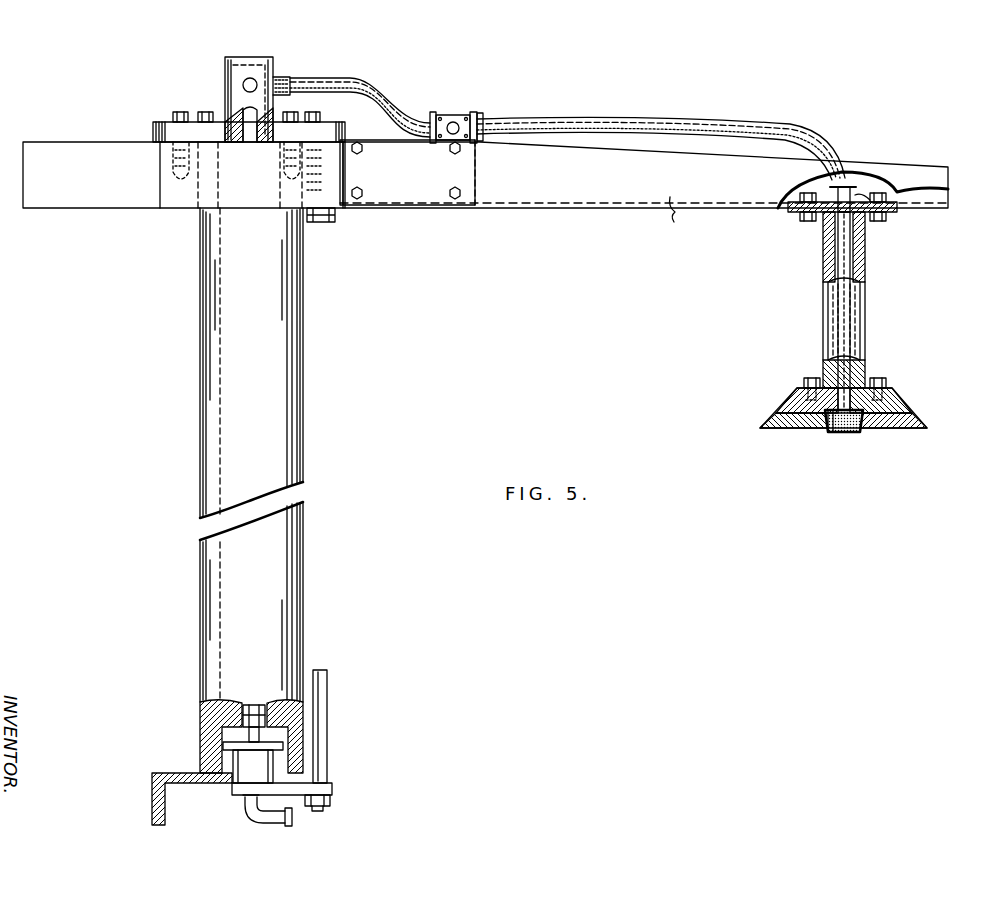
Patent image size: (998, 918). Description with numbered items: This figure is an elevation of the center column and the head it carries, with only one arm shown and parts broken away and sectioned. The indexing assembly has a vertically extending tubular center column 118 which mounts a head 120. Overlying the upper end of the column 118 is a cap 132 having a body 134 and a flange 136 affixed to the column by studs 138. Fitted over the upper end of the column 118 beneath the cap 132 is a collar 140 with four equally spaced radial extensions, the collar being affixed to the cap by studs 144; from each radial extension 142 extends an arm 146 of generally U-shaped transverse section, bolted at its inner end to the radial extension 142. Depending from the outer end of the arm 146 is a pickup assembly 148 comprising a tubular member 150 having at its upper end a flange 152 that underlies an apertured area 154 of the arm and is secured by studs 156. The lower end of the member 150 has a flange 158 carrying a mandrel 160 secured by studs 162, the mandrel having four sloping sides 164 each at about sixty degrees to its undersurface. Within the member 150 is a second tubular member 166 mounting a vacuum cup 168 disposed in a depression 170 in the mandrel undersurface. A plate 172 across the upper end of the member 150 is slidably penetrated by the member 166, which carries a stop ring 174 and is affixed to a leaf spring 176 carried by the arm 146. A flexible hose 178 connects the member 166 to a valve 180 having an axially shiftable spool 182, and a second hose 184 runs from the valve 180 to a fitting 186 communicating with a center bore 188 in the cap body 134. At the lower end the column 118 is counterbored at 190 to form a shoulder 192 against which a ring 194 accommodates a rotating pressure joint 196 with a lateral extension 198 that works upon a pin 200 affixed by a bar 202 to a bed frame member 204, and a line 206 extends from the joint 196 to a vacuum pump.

The center column 118 is at (307, 357).
The head 120 is at (457, 235).
The cap 132 is at (207, 92).
The cap body 134 is at (274, 64).
The flange 136 is at (153, 130).
The studs 138 is at (206, 112).
The collar 140 is at (183, 188).
The radial extension 142 is at (50, 195).
The studs 144 is at (180, 113).
The arm 146 is at (692, 215).
The pickup assembly 148 is at (900, 279).
The tubular member 150 is at (866, 252).
The flange 152 is at (897, 210).
The aperture 154 is at (872, 200).
The studs 156 is at (882, 203).
The flange 158 is at (886, 392).
The mandrel 160 is at (912, 405).
The studs 162 is at (872, 380).
The sloping sides 164 is at (800, 412).
The second tubular member 166 is at (836, 282).
The vacuum cup 168 is at (856, 430).
The depression 170 is at (822, 424).
The plate 172 is at (843, 185).
The stop ring 174 is at (836, 224).
The leaf spring 176 is at (858, 190).
The flexible hose 178 is at (682, 120).
The valve 180 is at (463, 115).
The spool 182 is at (460, 127).
The second flexible hose 184 is at (380, 93).
The fitting 186 is at (285, 97).
The center bore 188 is at (243, 126).
The counterbore 190 is at (222, 766).
The shoulder 192 is at (287, 720).
The ring 194 is at (287, 742).
The rotating pressure joint 196 is at (262, 766).
The lateral extension 198 is at (332, 789).
The pin 200 is at (328, 672).
The bar 202 is at (335, 800).
The bed frame member 204 is at (152, 792).
The line 206 is at (250, 817).